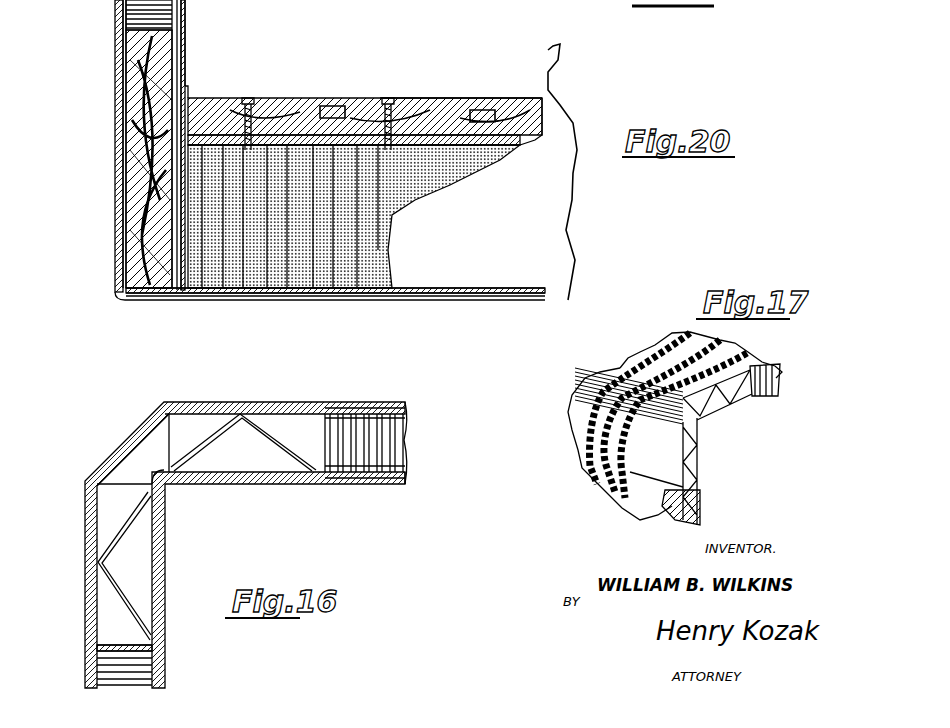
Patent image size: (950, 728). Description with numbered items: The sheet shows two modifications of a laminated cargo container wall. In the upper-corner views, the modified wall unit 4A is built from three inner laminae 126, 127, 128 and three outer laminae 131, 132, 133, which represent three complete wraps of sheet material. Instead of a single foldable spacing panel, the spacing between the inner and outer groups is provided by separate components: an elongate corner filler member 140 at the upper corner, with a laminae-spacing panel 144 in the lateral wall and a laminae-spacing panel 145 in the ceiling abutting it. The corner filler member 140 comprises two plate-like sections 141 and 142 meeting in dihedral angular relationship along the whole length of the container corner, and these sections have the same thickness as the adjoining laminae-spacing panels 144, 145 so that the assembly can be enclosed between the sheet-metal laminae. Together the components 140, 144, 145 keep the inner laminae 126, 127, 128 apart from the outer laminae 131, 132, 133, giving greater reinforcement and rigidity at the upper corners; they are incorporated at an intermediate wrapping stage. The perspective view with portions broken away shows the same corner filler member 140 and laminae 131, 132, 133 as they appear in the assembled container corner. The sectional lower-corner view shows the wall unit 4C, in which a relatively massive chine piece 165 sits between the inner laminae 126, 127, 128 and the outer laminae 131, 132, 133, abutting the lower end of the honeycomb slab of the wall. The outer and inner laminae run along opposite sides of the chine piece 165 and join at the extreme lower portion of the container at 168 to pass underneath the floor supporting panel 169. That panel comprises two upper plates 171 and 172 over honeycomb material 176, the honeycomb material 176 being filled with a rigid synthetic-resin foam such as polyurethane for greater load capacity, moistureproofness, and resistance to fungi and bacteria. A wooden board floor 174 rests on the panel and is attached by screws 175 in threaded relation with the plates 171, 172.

In FIG. 16, the modified wall unit 4A is at (176, 395).
In FIG. 17, the modified wall unit 4A is at (626, 350).
In FIG. 20, the wall unit 4C is at (240, 80).
In FIG. 20, the inner lamina 126 is at (186, 68).
In FIG. 16, the inner lamina 126 is at (386, 482).
In FIG. 20, the inner lamina 127 is at (186, 40).
In FIG. 16, the inner lamina 127 is at (400, 486).
In FIG. 20, the inner lamina 128 is at (186, 14).
In FIG. 16, the inner lamina 128 is at (402, 480).
In FIG. 20, the outer lamina 131 is at (120, 48).
In FIG. 16, the outer lamina 131 is at (352, 405).
In FIG. 17, the outer lamina 131 is at (578, 412).
In FIG. 20, the outer lamina 132 is at (124, 74).
In FIG. 16, the outer lamina 132 is at (388, 406).
In FIG. 17, the outer lamina 132 is at (596, 480).
In FIG. 20, the outer lamina 133 is at (128, 97).
In FIG. 16, the outer lamina 133 is at (406, 410).
In FIG. 17, the outer lamina 133 is at (628, 490).
In FIG. 16, the elongate corner filler member 140 is at (264, 412).
In FIG. 17, the elongate corner filler member 140 is at (668, 474).
In FIG. 16, the plate-like section 141 is at (160, 574).
In FIG. 16, the plate-like section 142 is at (247, 478).
In FIG. 16, the laminae-spacing panel 144 is at (160, 674).
In FIG. 16, the laminae-spacing panel 145 is at (333, 478).
In FIG. 20, the chine piece 165 is at (118, 203).
In FIG. 20, the lower junction of laminae 168 is at (200, 300).
In FIG. 20, the floor supporting panel 169 is at (491, 278).
In FIG. 20, the upper plate 171 is at (345, 103).
In FIG. 20, the upper plate 172 is at (353, 107).
In FIG. 20, the wooden board floor 174 is at (448, 104).
In FIG. 20, the screw 175 is at (258, 96).
In FIG. 20, the honeycomb material 176 is at (254, 300).